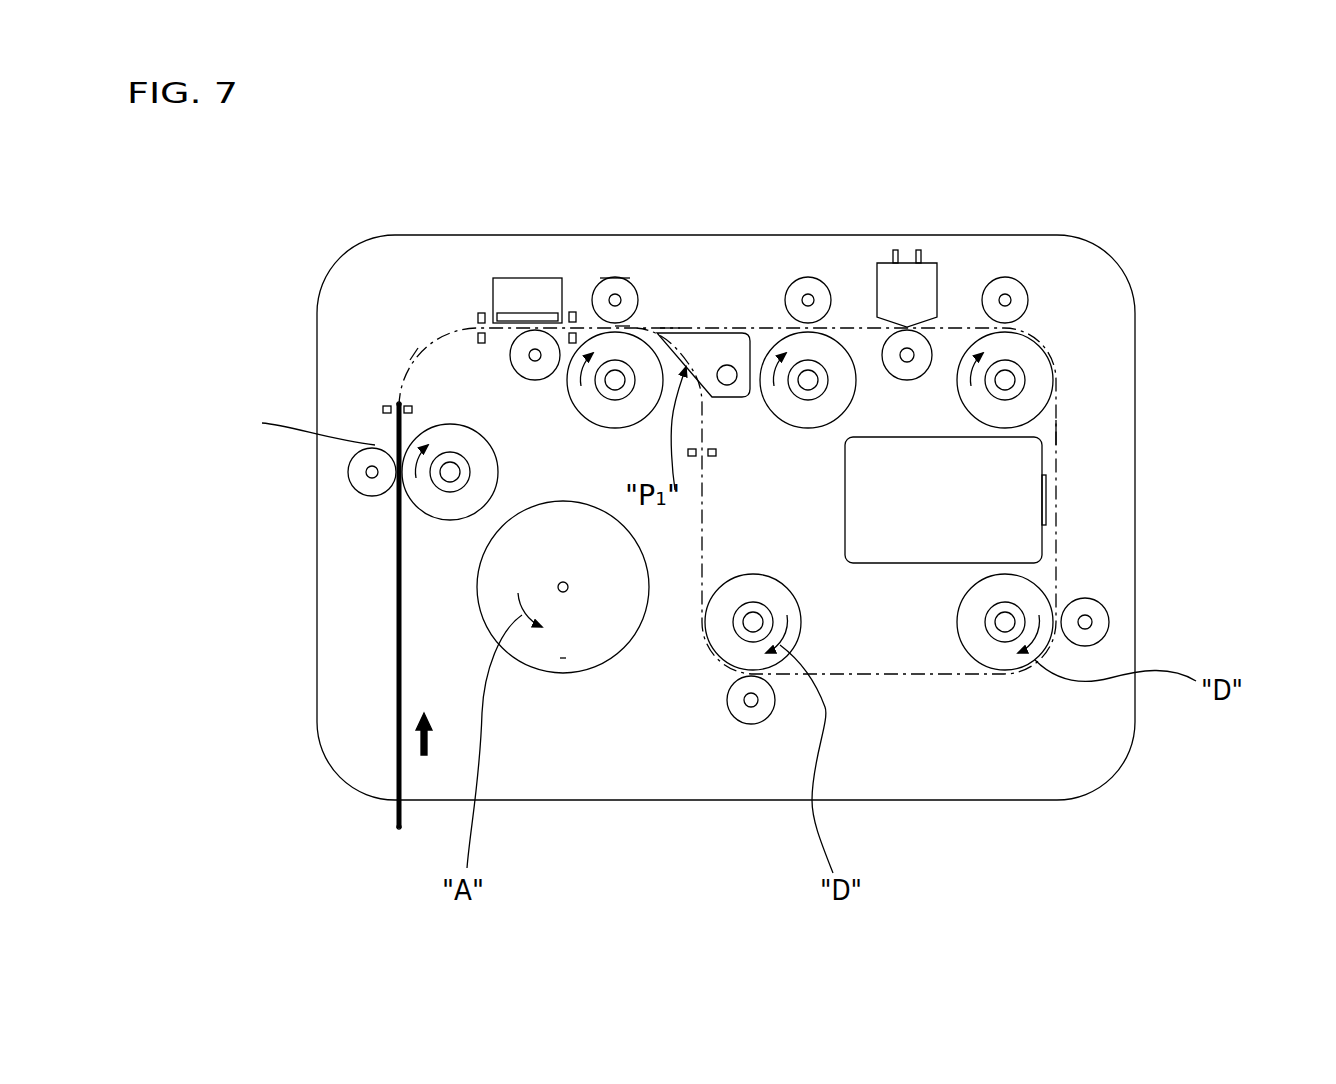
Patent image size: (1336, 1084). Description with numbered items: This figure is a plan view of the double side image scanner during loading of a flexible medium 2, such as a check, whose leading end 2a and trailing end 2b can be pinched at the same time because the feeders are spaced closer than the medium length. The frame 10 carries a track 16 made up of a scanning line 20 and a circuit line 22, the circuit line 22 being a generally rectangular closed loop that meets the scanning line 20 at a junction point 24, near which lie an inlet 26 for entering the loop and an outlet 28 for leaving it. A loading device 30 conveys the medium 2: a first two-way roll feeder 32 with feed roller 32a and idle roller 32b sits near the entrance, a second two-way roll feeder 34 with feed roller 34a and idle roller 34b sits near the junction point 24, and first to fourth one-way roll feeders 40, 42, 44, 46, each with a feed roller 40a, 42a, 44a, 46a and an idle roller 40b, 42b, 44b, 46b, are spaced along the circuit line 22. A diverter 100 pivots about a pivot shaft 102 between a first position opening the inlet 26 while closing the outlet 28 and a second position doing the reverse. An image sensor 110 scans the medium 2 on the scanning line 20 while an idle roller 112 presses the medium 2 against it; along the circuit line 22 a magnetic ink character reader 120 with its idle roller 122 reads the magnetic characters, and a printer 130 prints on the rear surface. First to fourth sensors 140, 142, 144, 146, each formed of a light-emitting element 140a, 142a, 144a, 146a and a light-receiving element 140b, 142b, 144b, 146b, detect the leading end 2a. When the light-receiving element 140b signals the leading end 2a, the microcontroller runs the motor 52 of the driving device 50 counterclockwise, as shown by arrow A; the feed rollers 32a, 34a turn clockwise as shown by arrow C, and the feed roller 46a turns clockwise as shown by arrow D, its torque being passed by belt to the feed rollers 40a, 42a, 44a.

The medium 2 is at (397, 660).
The leading end 2a is at (399, 400).
The trailing end 2b is at (399, 828).
The frame 10 is at (1030, 800).
The track 16 is at (918, 678).
The scanning line 20 is at (420, 345).
The circuit line 22 is at (1058, 432).
The junction point 24 is at (622, 325).
The inlet 26 is at (667, 325).
The outlet 28 is at (720, 345).
The loading device 30 is at (345, 473).
The first two-way roll feeder 32 is at (229, 505).
The feed roller 32a is at (435, 507).
The idle roller 32b is at (372, 487).
The second two-way roll feeder 34 is at (665, 150).
The feed roller 34a is at (605, 290).
The idle roller 34b is at (621, 278).
The first one-way roll feeder 40 is at (924, 112).
The feed roller 40a is at (835, 357).
The idle roller 40b is at (825, 310).
The second one-way roll feeder 42 is at (1243, 290).
The feed roller 42a is at (1038, 365).
The idle roller 42b is at (1012, 300).
The third one-way roll feeder 44 is at (1243, 560).
The feed roller 44a is at (1025, 597).
The idle roller 44b is at (1093, 612).
The fourth one-way roll feeder 46 is at (765, 908).
The feed roller 46a is at (727, 637).
The idle roller 46b is at (748, 713).
The driving device 50 is at (535, 674).
The motor 52 is at (575, 648).
The diverter 100 is at (815, 285).
The pivot shaft 102 is at (730, 392).
The image sensor 110 is at (527, 290).
The idle roller 112 is at (530, 340).
The magnetic ink character reader 120 is at (907, 273).
The idle roller 122 is at (907, 345).
The printer 130 is at (1015, 473).
The first sensor 140 is at (213, 328).
The light-emitting element 140a is at (387, 405).
The light-receiving element 140b is at (408, 405).
The second sensor 142 is at (303, 148).
The light-emitting element 142a is at (477, 318).
The light-receiving element 142b is at (477, 338).
The third sensor 144 is at (635, 460).
The light-emitting element 144a is at (545, 382).
The light-receiving element 144b is at (598, 402).
The fourth sensor 146 is at (786, 478).
The light-emitting element 146a is at (712, 458).
The light-receiving element 146b is at (692, 460).